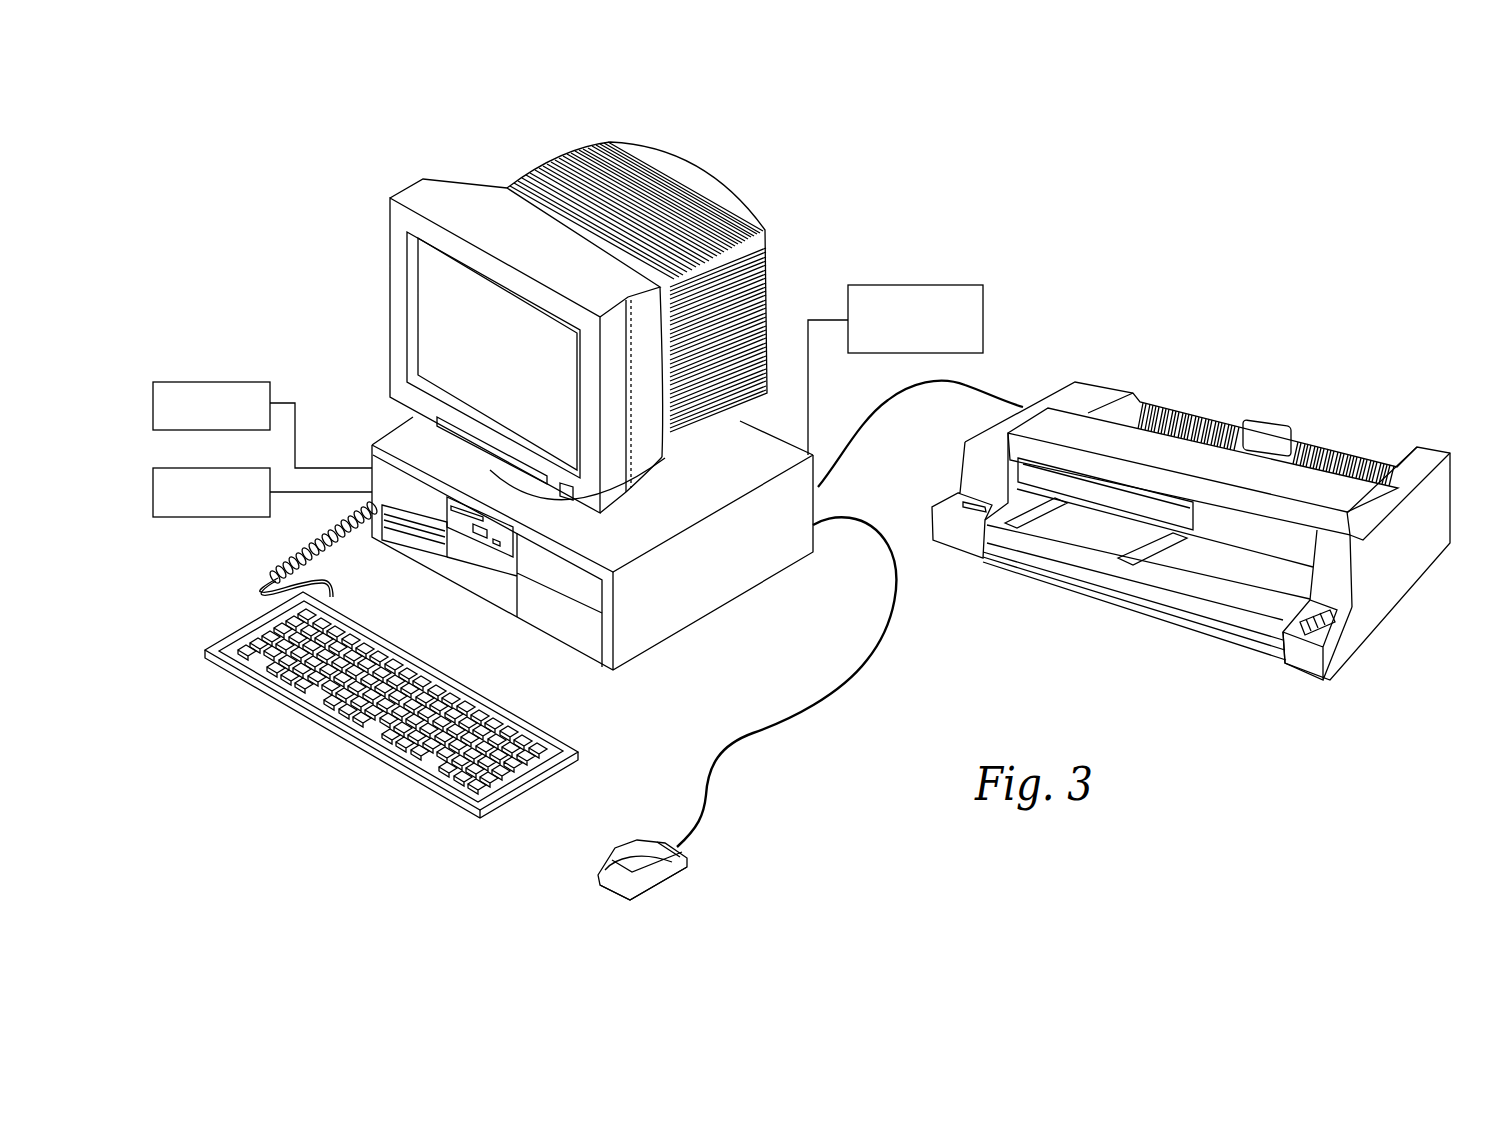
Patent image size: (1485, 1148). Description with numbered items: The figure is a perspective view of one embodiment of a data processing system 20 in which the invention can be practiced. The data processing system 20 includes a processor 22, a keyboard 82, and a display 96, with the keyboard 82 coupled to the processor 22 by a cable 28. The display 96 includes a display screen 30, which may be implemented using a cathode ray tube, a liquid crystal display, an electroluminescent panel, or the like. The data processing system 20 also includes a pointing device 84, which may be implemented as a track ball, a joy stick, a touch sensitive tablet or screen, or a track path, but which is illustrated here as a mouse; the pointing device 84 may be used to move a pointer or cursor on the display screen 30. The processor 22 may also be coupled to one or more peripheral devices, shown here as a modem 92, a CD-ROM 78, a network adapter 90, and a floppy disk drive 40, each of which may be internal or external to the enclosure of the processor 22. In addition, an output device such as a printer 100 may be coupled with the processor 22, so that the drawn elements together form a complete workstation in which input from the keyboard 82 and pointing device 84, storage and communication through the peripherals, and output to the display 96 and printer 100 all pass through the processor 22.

The data processing system 20 is at (968, 190).
The processor 22 is at (614, 687).
The cable 28 is at (287, 551).
The display screen 30 is at (514, 364).
The floppy disk drive 40 is at (478, 532).
The CD-ROM 78 is at (203, 468).
The keyboard 82 is at (358, 754).
The pointing device 84 is at (680, 877).
The network adapter 90 is at (983, 297).
The modem 92 is at (203, 382).
The display 96 is at (372, 280).
The printer 100 is at (1146, 368).